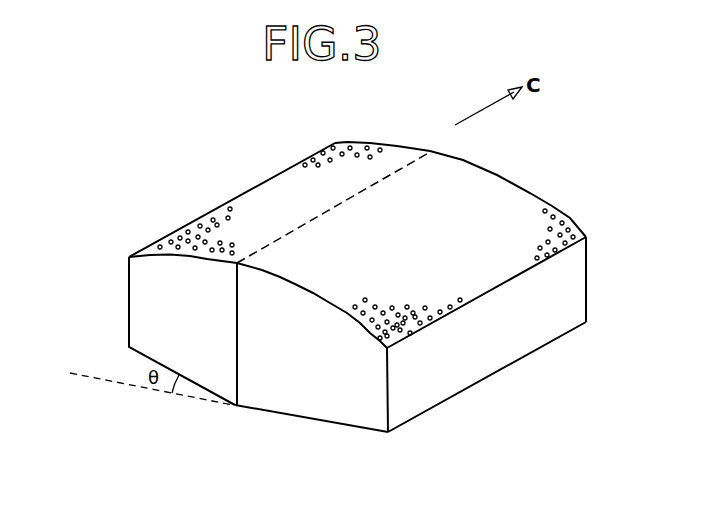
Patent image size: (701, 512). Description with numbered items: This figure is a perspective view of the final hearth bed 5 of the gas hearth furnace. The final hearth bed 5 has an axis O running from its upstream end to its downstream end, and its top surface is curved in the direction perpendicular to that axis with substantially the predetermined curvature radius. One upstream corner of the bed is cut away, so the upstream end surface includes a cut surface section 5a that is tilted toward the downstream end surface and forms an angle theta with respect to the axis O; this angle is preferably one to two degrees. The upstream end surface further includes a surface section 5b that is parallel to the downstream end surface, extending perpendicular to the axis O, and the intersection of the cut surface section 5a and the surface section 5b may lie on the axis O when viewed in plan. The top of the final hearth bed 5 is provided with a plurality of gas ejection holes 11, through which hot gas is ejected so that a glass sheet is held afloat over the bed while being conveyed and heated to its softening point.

The final hearth bed 5 is at (252, 159).
The cut surface section 5a is at (158, 310).
The surface section 5b is at (312, 380).
The gas ejection holes 11 is at (548, 242).